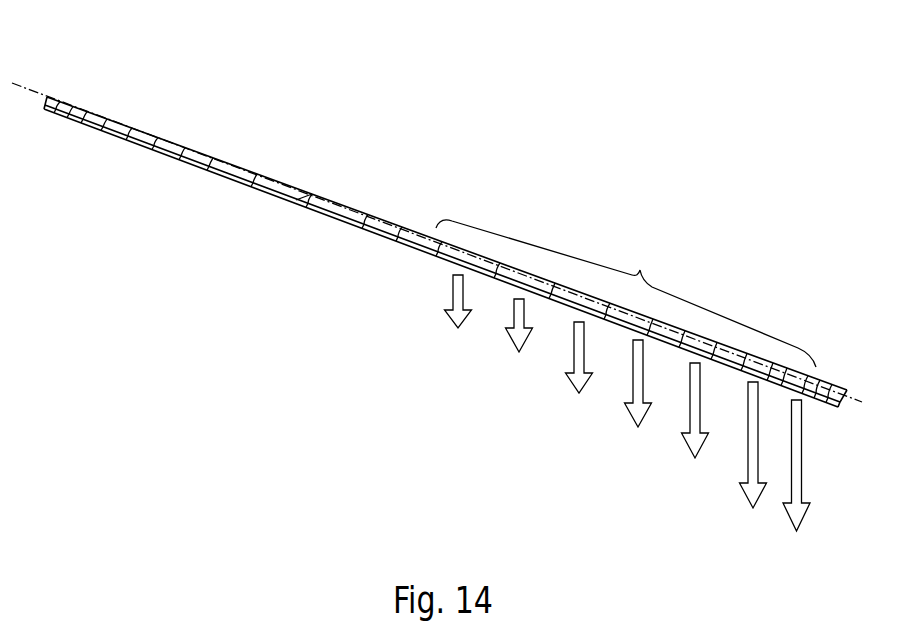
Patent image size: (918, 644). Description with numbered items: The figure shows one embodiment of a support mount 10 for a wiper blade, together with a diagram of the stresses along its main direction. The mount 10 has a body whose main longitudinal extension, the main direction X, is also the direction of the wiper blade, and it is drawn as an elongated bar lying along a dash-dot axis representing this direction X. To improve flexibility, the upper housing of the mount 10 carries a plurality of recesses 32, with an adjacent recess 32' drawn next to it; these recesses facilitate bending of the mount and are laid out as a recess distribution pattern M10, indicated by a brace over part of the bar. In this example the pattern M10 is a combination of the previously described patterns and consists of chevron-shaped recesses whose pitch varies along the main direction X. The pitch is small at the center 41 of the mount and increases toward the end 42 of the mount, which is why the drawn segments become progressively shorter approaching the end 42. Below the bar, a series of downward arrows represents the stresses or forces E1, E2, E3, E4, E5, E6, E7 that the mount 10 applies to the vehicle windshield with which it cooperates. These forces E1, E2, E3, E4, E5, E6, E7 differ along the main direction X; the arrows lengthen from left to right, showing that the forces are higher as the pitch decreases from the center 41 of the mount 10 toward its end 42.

The support mount 10 is at (180, 203).
The recess 32 is at (307, 155).
The adjacent link segment 32' is at (284, 248).
The center of the mount 41 is at (404, 218).
The end of the mount 42 is at (823, 368).
The recess distribution pattern M10 is at (626, 293).
The main direction X is at (24, 84).
The stress or force E1 is at (458, 318).
The stress or force E2 is at (520, 342).
The stress or force E3 is at (579, 373).
The stress or force E4 is at (638, 400).
The stress or force E5 is at (695, 426).
The stress or force E6 is at (753, 463).
The stress or force E7 is at (796, 482).